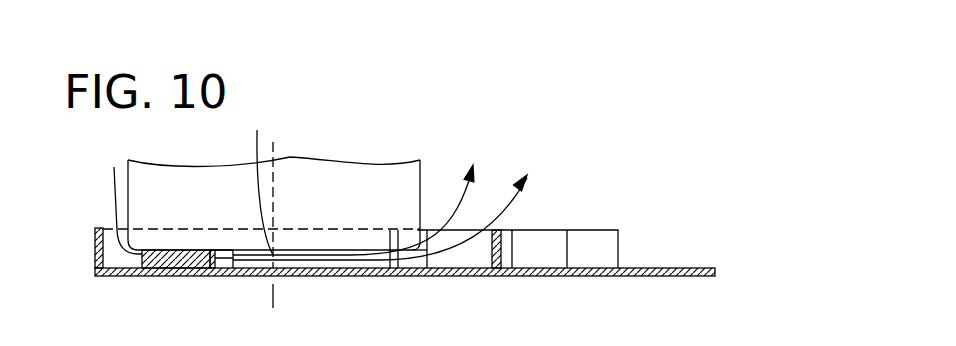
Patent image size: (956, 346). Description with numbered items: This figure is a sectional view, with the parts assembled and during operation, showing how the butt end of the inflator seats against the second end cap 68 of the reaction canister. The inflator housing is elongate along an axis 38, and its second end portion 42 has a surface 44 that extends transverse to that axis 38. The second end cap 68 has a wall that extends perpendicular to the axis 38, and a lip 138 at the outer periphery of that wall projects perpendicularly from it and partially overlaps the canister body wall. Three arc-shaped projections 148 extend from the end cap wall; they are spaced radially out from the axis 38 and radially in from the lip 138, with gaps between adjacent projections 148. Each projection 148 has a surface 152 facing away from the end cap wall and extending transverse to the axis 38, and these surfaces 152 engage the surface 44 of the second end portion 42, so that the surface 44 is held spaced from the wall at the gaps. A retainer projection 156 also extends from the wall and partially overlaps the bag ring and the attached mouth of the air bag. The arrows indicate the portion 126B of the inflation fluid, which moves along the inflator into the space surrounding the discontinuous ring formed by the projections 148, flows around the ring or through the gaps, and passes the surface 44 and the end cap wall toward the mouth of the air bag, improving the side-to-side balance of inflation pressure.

The axis 38 is at (275, 152).
The second end portion 42 is at (400, 125).
The surface 44 is at (228, 277).
The second end cap 68 is at (702, 203).
The portion of the inflation fluid 126B is at (497, 214).
The lip 138 is at (618, 248).
The arc-shaped projections 148 is at (370, 275).
The surface 152 is at (205, 253).
The retainer projection 156 is at (502, 248).